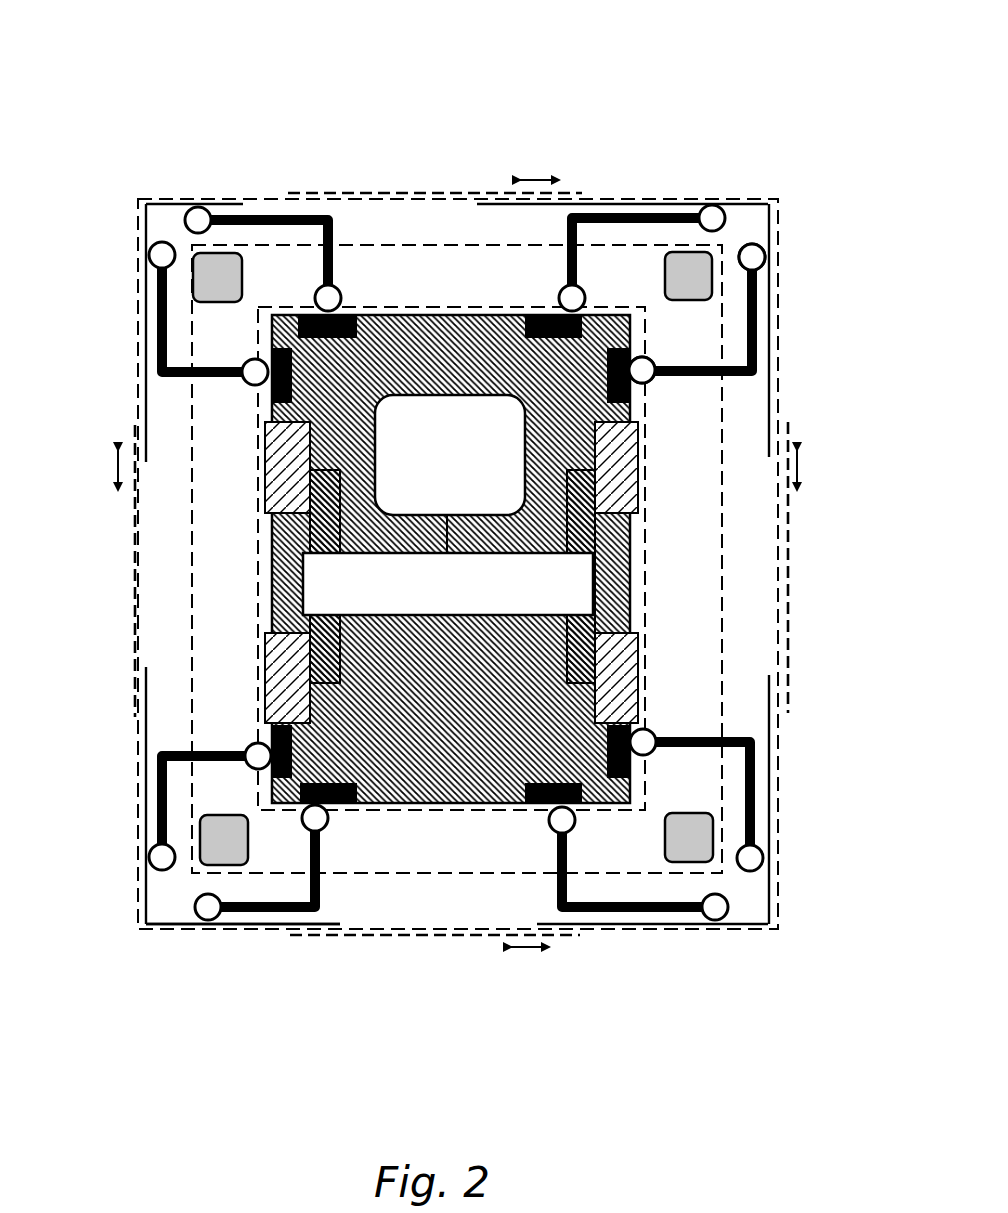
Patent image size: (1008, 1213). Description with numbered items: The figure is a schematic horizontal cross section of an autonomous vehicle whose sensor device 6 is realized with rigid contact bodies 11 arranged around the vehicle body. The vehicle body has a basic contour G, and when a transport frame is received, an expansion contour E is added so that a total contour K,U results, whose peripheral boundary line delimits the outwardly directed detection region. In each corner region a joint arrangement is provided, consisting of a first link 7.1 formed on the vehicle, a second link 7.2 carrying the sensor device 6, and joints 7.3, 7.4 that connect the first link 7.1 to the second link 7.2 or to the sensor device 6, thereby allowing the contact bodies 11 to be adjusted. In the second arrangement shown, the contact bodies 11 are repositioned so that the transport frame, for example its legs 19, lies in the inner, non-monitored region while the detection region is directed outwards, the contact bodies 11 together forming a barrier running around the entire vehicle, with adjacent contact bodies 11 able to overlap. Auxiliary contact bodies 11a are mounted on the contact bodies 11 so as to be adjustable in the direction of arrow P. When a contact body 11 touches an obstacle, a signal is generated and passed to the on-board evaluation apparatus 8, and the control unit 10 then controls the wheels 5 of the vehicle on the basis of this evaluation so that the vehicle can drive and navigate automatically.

The wheels 5 is at (273, 682).
The sensor device 6 is at (188, 136).
The first link 7.1 is at (607, 373).
The second link 7.2 is at (262, 215).
The joint 7.3 is at (646, 374).
The joint 7.4 is at (766, 258).
The evaluation apparatus 8 is at (436, 479).
The control unit 10 is at (428, 603).
The contact body 11 is at (165, 200).
The auxiliary contact body 11a is at (437, 192).
The legs 19 is at (244, 281).
The expansion contour E is at (365, 873).
The basic contour G is at (400, 812).
The total contour and peripheral boundary line K,U is at (265, 925).
The arrow P is at (538, 178).